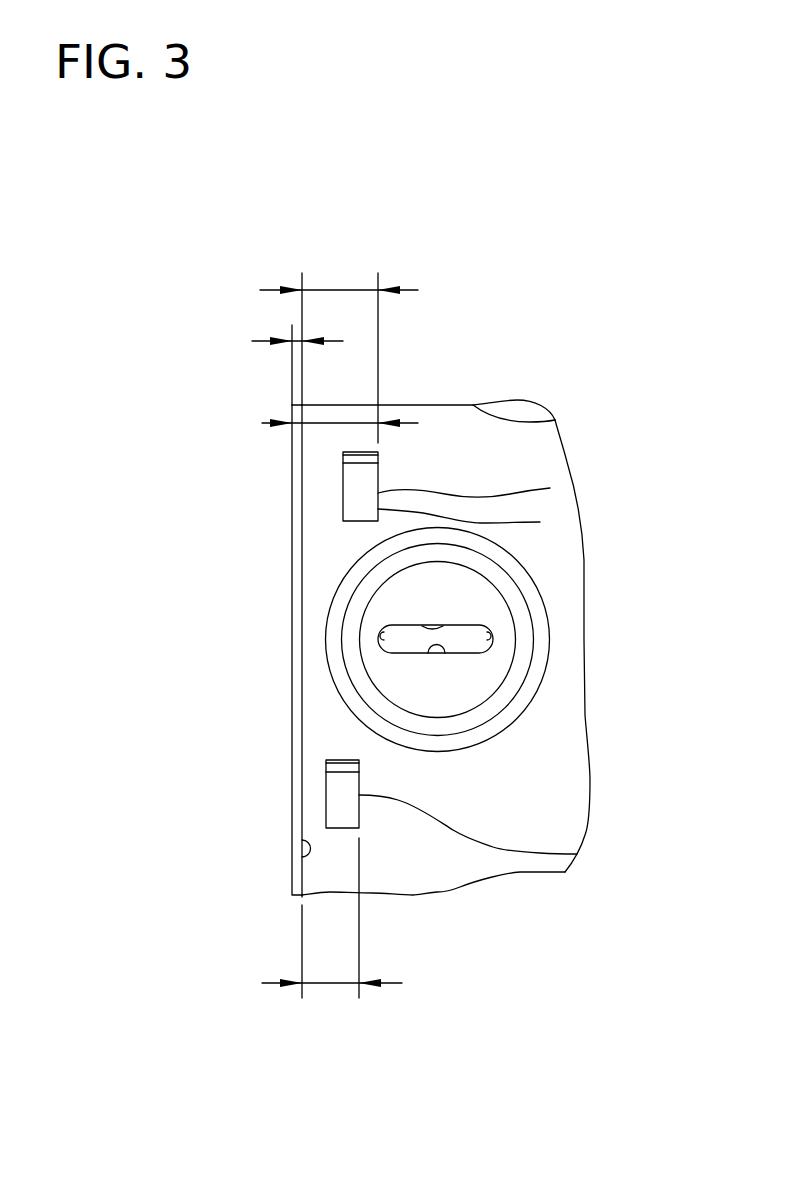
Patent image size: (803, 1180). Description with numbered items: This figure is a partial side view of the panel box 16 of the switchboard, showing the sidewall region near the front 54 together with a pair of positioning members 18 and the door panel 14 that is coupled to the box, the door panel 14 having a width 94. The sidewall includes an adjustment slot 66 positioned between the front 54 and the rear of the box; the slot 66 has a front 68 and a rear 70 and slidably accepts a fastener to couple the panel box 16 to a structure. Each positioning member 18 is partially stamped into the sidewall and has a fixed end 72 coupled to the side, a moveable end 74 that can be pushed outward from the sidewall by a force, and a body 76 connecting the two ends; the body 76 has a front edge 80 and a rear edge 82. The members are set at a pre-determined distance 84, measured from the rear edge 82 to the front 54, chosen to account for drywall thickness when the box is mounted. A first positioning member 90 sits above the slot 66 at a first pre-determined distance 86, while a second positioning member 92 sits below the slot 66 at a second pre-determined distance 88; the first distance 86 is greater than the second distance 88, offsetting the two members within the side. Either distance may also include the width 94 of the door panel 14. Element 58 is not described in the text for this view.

The door panel 14 is at (292, 707).
The panel box 16 is at (522, 757).
The positioning member 18 is at (316, 484).
The front 54 is at (302, 840).
The body surface 58 is at (545, 800).
The adjustment slot 66 is at (445, 650).
The front of slot 68 is at (385, 635).
The rear of slot 70 is at (487, 635).
The fixed end 72 is at (368, 473).
The moveable end 74 is at (357, 522).
The body 76 is at (550, 488).
The front edge 80 is at (343, 516).
The rear edge 82 is at (540, 522).
The pre-determined distance 84 is at (267, 290).
The first pre-determined distance 86 is at (270, 423).
The second pre-determined distance 88 is at (270, 983).
The first positioning member 90 is at (362, 488).
The second positioning member 92 is at (350, 807).
The width of door panel 94 is at (260, 341).